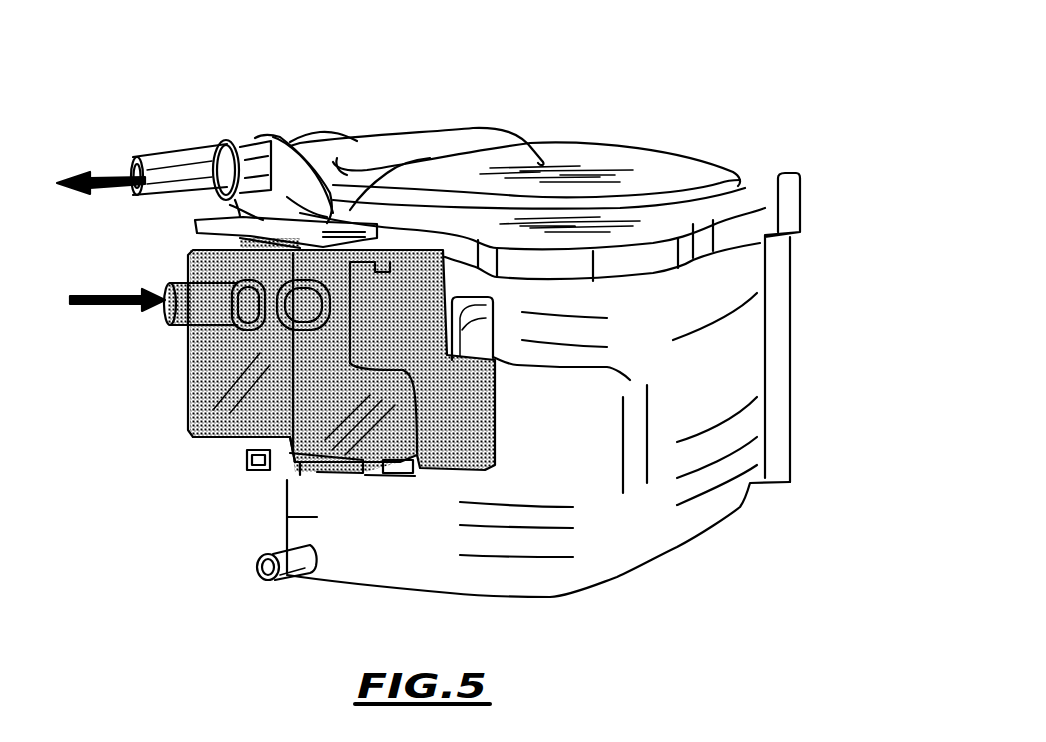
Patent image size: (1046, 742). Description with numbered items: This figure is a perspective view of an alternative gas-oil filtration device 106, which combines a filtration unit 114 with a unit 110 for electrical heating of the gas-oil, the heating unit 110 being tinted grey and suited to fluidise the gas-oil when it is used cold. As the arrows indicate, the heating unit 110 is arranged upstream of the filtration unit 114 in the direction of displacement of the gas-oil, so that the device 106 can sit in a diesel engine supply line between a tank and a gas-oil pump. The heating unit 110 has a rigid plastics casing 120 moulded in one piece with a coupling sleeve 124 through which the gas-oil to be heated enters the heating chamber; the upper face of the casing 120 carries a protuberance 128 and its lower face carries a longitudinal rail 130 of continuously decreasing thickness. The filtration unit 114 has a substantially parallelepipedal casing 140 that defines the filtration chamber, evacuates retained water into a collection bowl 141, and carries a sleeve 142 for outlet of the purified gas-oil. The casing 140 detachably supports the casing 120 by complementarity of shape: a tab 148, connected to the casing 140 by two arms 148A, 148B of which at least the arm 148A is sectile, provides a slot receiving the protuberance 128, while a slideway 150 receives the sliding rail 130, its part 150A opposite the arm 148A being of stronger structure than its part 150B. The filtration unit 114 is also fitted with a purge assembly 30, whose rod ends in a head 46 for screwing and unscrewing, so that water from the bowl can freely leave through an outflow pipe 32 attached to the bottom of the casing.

The purge assembly 30 is at (332, 110).
The outflow pipe 32 is at (290, 577).
The head 46 is at (315, 127).
The device for filtration of gas-oil 106 is at (307, 608).
The heating unit 110 is at (282, 391).
The filtration unit 114 is at (707, 543).
The casing 120 is at (240, 420).
The coupling sleeve 124 is at (180, 303).
The protuberance 128 is at (250, 142).
The longitudinal rail 130 is at (343, 462).
The casing 140 is at (757, 308).
The collection bowl 141 is at (525, 583).
The sleeve 142 is at (174, 160).
The tab 148 is at (217, 230).
The arm 148A is at (215, 210).
The arm 148B is at (340, 160).
The slideway 150 is at (307, 468).
The slideway part 150A is at (278, 453).
The slideway part 150B is at (395, 463).